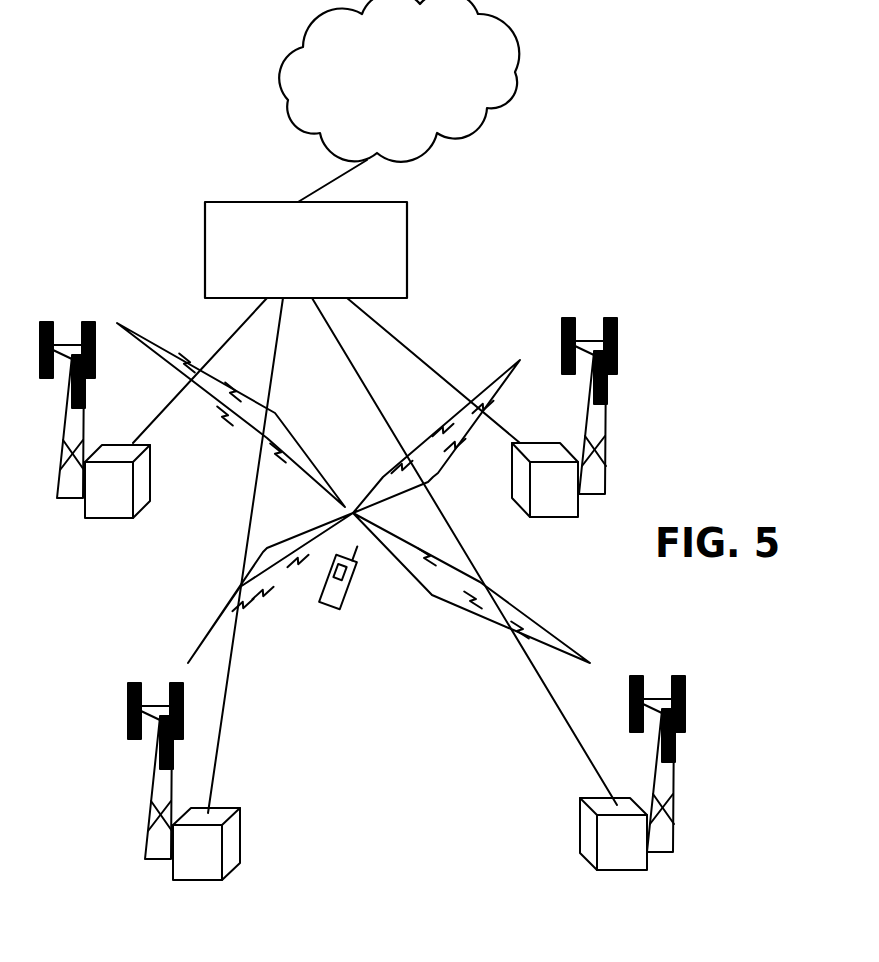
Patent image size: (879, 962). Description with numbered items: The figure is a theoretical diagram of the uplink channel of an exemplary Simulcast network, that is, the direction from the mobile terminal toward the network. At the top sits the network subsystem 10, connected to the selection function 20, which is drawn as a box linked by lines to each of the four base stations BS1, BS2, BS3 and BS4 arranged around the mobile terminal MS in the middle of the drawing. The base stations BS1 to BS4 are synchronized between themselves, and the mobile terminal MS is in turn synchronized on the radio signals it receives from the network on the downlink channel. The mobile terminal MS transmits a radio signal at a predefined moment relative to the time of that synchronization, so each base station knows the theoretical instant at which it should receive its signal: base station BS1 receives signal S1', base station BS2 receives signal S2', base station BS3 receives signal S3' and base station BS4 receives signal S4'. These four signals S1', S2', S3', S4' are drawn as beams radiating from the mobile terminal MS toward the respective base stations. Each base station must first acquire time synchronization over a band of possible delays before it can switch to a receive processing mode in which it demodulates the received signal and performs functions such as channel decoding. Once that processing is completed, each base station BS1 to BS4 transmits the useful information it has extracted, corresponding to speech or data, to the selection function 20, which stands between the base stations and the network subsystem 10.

The network subsystem 10 is at (515, 72).
The selection function 20 is at (407, 250).
The base station BS1 is at (108, 520).
The base station BS2 is at (200, 882).
The base station BS3 is at (555, 518).
The base station BS4 is at (625, 873).
The signal S1' is at (231, 394).
The signal S2' is at (247, 588).
The signal S3' is at (436, 415).
The signal S4' is at (490, 588).
The mobile terminal MS is at (347, 587).